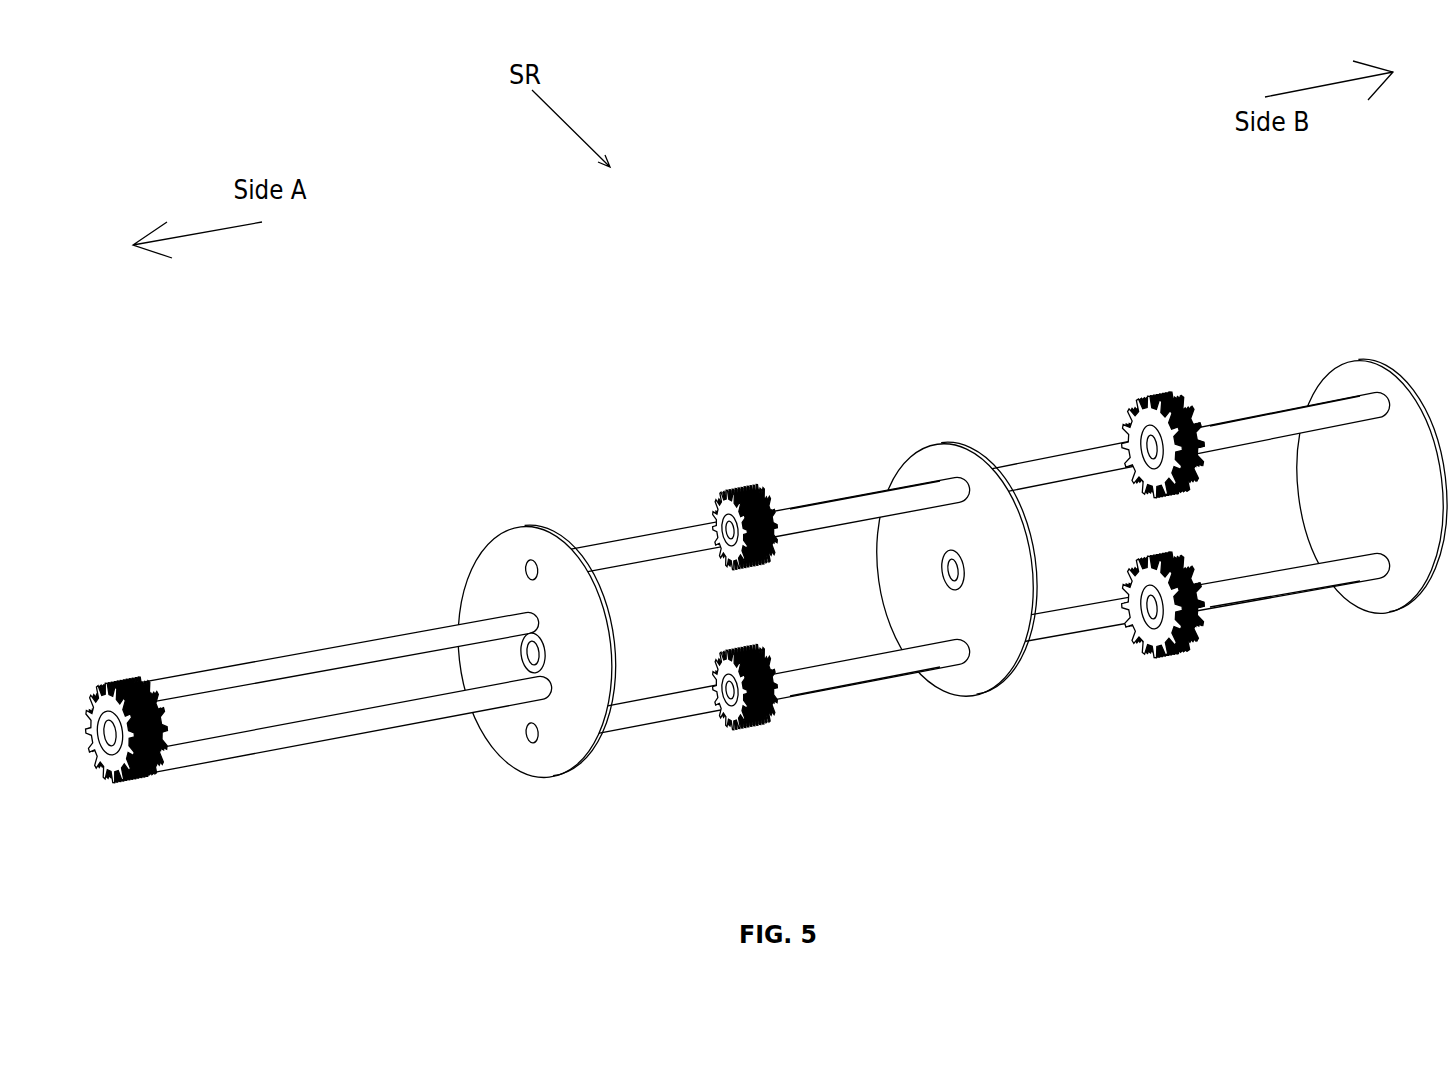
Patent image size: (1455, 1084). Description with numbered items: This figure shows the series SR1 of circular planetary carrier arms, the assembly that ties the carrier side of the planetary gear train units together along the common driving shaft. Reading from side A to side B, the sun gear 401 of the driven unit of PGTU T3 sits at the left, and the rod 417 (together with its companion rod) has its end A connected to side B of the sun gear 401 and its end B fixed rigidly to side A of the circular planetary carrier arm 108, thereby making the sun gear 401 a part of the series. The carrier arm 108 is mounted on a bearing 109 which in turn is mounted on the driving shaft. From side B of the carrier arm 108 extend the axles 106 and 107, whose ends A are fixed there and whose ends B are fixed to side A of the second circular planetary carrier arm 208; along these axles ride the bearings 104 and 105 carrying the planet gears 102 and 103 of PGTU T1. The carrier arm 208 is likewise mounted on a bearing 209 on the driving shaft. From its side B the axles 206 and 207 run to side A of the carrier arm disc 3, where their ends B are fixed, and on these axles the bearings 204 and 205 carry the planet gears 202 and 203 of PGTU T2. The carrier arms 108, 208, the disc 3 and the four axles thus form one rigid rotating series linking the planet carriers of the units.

The carrier arm disc 3 is at (1373, 347).
The planet gear 102 is at (720, 490).
The planet gear 103 is at (717, 657).
The bearing 104 is at (722, 540).
The bearing 105 is at (723, 722).
The axle 106 is at (866, 485).
The axle 107 is at (898, 688).
The circular planetary carrier arm 108 is at (484, 532).
The bearing 109 is at (523, 638).
The planet gear 202 is at (1137, 426).
The planet gear 203 is at (1135, 573).
The bearing 204 is at (1130, 416).
The bearing 205 is at (1140, 640).
The axle 206 is at (1289, 396).
The axle 207 is at (1322, 600).
The circular planetary carrier arm 208 is at (933, 429).
The bearing 209 is at (948, 552).
The sun gear 401 is at (133, 682).
The rod 417 is at (455, 613).